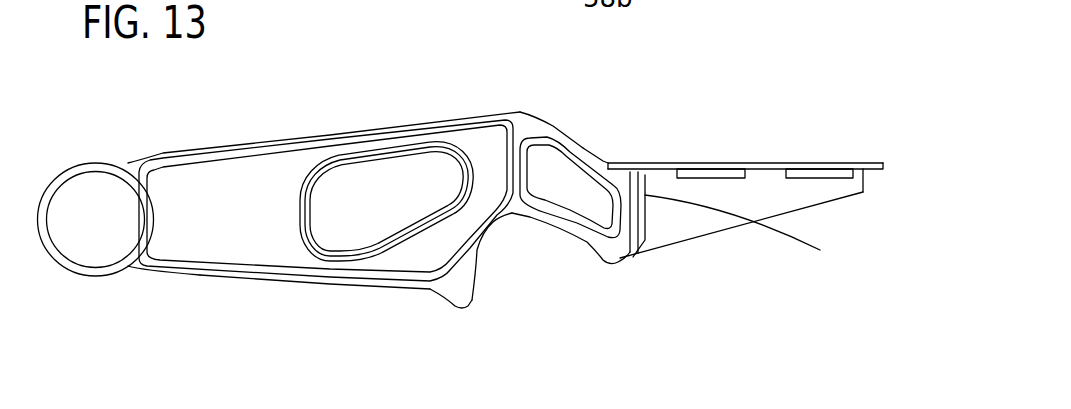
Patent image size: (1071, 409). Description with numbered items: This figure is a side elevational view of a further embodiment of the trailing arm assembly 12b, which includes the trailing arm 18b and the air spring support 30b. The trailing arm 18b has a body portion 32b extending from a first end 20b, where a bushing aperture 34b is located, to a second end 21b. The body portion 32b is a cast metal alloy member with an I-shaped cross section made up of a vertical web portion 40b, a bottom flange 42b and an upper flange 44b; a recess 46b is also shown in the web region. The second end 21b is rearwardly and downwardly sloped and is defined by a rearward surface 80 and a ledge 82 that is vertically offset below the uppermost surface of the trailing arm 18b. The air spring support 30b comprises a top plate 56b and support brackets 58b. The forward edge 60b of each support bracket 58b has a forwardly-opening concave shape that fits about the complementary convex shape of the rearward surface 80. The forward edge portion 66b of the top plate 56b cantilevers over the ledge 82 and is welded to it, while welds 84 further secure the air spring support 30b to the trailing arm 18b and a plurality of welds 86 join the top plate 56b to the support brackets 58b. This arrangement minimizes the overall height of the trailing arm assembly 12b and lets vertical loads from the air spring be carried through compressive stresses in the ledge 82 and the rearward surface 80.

The trailing arm assembly 12b is at (355, 108).
The trailing arm 18b is at (305, 298).
The first end 20b is at (153, 277).
The second end 21b is at (424, 294).
The air spring support 30b is at (745, 156).
The body portion 32b is at (282, 134).
The bushing aperture 34b is at (82, 165).
The vertical web portion 40b is at (262, 232).
The bottom flange 42b is at (277, 280).
The upper flange 44b is at (231, 144).
The recess 46b is at (478, 257).
The top plate 56b is at (831, 162).
The support bracket 58b is at (703, 225).
The forward edge 60b is at (643, 212).
The forward edge portion 66b is at (630, 168).
The rearward surface 80 is at (737, 178).
The ledge 82 is at (610, 162).
The welds 84 is at (640, 235).
The welds 86 is at (820, 180).